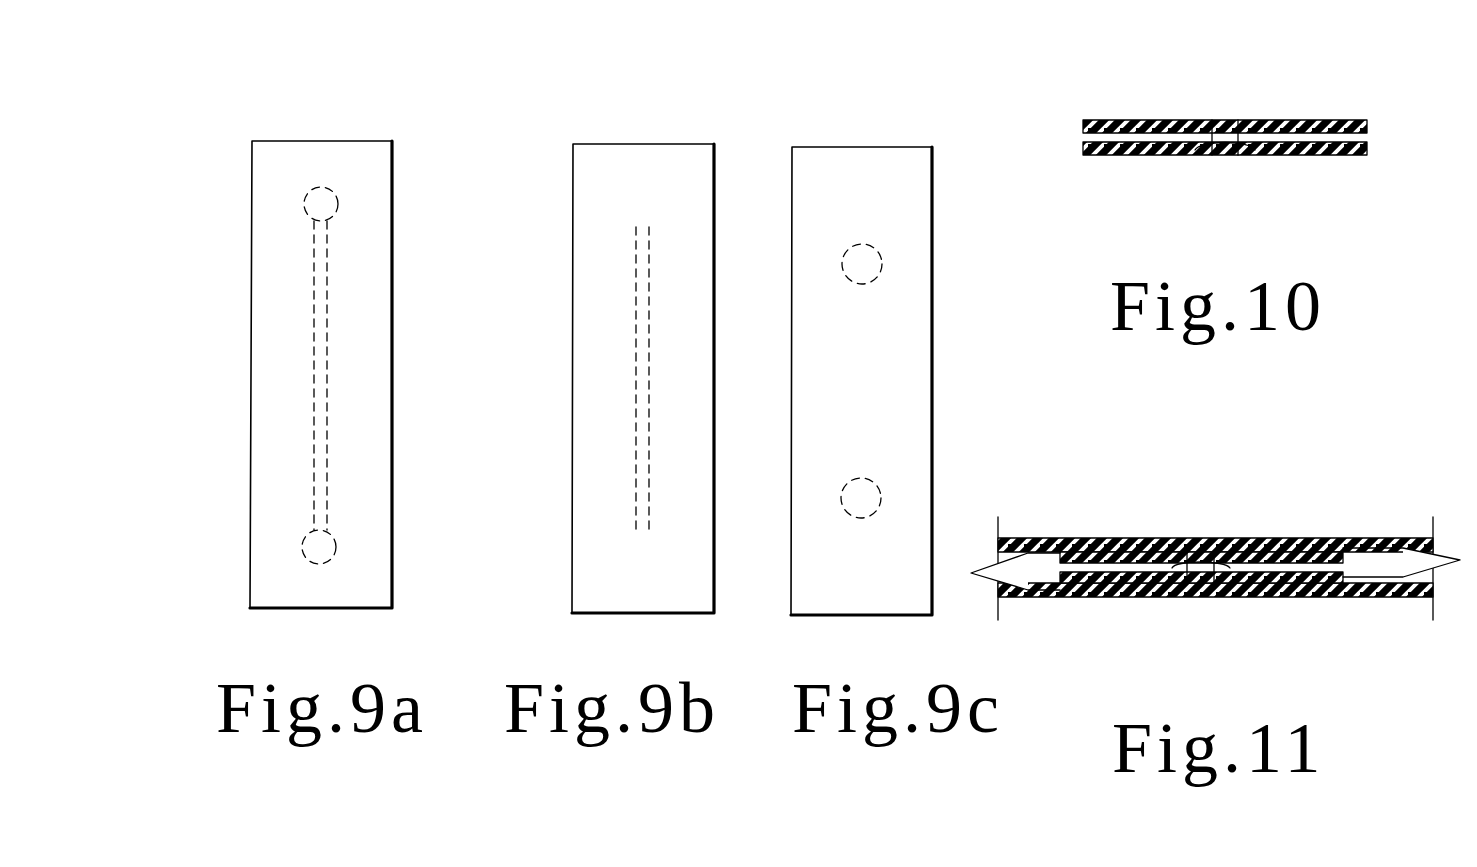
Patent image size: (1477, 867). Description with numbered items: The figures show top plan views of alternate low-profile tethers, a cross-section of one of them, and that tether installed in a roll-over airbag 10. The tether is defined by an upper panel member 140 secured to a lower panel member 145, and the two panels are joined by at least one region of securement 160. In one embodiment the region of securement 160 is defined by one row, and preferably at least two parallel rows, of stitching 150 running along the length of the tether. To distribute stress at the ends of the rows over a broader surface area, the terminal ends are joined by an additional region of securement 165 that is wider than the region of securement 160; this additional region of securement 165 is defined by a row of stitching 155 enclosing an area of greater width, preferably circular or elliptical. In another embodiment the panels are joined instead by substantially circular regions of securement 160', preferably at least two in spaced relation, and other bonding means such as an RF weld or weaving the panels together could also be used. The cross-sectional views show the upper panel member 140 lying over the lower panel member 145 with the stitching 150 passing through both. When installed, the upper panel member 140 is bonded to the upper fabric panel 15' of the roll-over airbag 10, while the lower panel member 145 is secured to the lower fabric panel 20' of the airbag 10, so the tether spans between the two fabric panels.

In FIG. 9A, the roll-over airbag 10 is at (252, 376).
In FIG. 11, the roll-over airbag 10 is at (1215, 556).
In FIG. 11, the upper fabric panel 15' is at (1207, 497).
In FIG. 11, the lower fabric panel 20' is at (1201, 629).
In FIG. 9A, the upper panel member 140 is at (363, 284).
In FIG. 9B, the upper panel member 140 is at (698, 167).
In FIG. 9C, the upper panel member 140 is at (861, 381).
In FIG. 10, the upper panel member 140 is at (1325, 119).
In FIG. 11, the upper panel member 140 is at (1338, 540).
In FIG. 10, the lower panel member 145 is at (1335, 156).
In FIG. 11, the lower panel member 145 is at (1348, 592).
In FIG. 9A, the stitching 150 is at (331, 319).
In FIG. 9B, the stitching 150 is at (650, 290).
In FIG. 10, the stitching 150 is at (1255, 160).
In FIG. 11, the stitching 150 is at (1233, 538).
In FIG. 9A, the row of stitching 155 is at (331, 319).
In FIG. 9A, the region of securement 160 is at (329, 319).
In FIG. 9B, the region of securement 160 is at (637, 364).
In FIG. 9C, the circular region of securement 160' is at (946, 371).
In FIG. 9A, the additional region of securement 165 is at (322, 204).